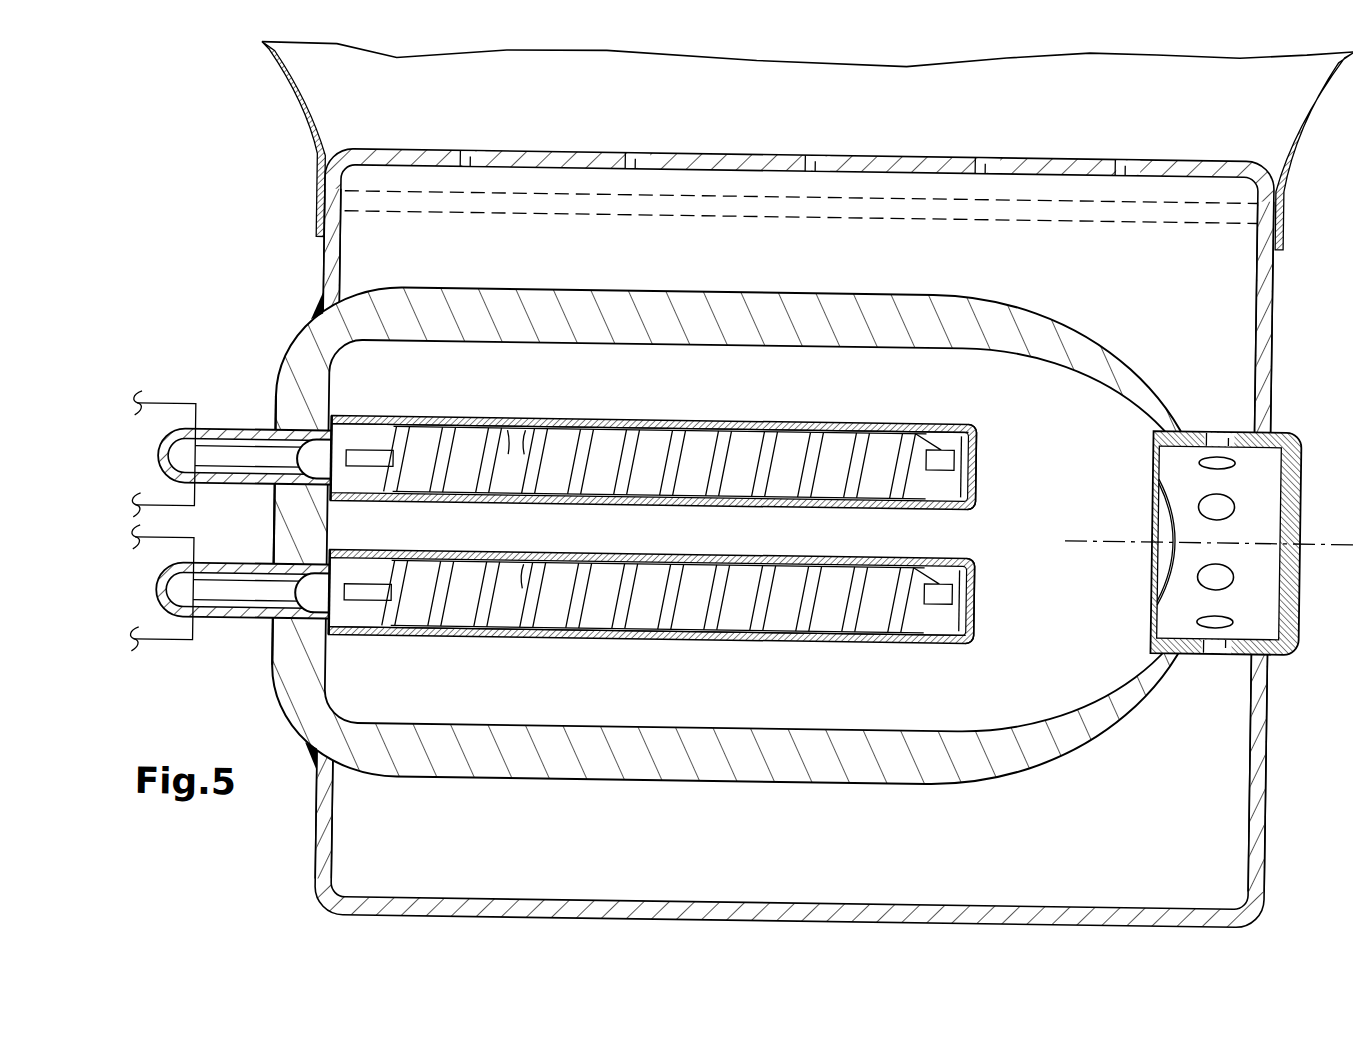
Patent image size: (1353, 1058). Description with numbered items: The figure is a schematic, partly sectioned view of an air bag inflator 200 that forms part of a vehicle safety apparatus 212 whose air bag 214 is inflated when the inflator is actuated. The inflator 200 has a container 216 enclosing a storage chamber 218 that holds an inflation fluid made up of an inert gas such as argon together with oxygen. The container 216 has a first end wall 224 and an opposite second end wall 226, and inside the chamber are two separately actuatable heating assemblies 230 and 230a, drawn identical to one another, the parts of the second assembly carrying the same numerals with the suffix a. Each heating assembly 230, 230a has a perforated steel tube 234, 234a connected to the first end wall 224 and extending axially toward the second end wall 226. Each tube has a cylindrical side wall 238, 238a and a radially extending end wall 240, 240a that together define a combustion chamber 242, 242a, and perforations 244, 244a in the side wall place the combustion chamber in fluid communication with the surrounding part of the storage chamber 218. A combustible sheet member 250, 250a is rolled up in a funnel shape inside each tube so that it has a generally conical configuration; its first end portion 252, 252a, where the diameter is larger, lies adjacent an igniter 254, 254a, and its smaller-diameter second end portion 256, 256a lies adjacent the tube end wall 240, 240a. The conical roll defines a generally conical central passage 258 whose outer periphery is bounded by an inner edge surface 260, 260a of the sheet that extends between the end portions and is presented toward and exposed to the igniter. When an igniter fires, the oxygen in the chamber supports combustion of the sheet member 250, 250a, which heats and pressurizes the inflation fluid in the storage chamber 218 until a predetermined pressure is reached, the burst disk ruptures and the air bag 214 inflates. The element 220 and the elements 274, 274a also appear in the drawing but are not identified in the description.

The air bag inflator 200 is at (741, 506).
The vehicle safety apparatus 212 is at (167, 209).
The air bag 214 is at (282, 109).
The container 216 is at (727, 505).
The storage chamber 218 is at (1113, 503).
The body wall 220 is at (754, 315).
The first end wall 224 is at (289, 677).
The second end wall 226 is at (1105, 368).
The first heating assembly 230 is at (715, 456).
The second heating assembly 230a is at (706, 614).
The perforated steel tube 234 is at (957, 421).
The perforated steel tube 234a is at (948, 648).
The cylindrical side wall 238 is at (702, 421).
The cylindrical side wall 238a is at (698, 641).
The end wall 240 is at (976, 477).
The end wall 240a is at (978, 590).
The combustion chamber 242 is at (952, 421).
The combustion chamber 242a is at (931, 638).
The perforations 244 is at (488, 424).
The perforations 244a is at (551, 640).
The combustible sheet member 250 is at (667, 434).
The combustible sheet member 250a is at (638, 639).
The first end portion 252 is at (406, 482).
The first end portion 252a is at (401, 612).
The igniter 254 is at (238, 431).
The igniter 254a is at (236, 628).
The second end portion 256 is at (886, 489).
The second end portion 256a is at (918, 575).
The central passage 258 is at (511, 454).
The inner edge surface 260 is at (522, 454).
The inner edge surface 260a is at (521, 597).
The plug 274 is at (322, 462).
The plug 274a is at (334, 603).